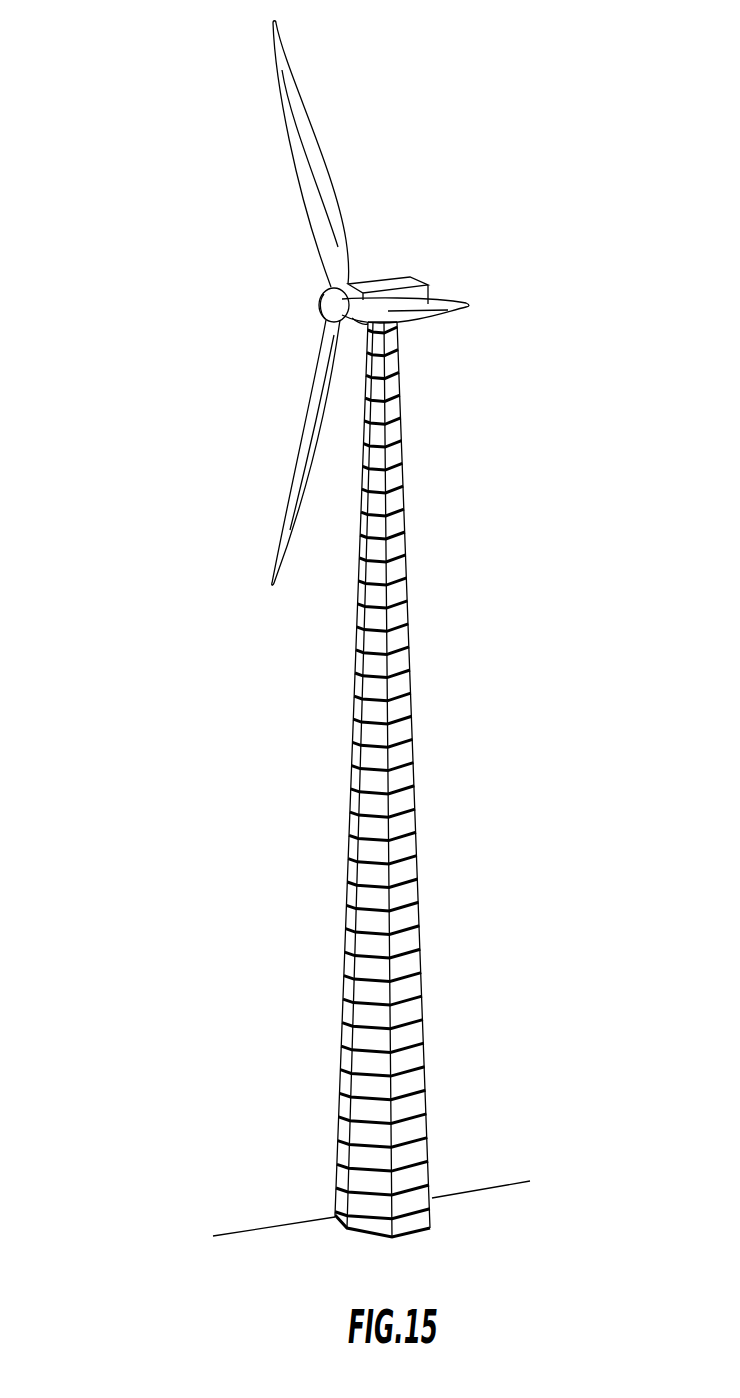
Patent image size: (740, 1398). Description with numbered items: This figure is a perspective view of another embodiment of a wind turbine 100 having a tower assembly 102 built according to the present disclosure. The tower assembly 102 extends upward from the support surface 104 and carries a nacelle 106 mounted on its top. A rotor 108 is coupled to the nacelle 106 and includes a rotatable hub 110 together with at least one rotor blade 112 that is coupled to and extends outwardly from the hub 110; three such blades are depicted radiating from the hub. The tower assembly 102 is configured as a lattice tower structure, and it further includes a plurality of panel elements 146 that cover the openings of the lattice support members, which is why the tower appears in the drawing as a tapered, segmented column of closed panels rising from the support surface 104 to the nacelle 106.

The wind turbine 100 is at (127, 268).
The tower assembly 102 is at (427, 690).
The support surface 104 is at (268, 1225).
The nacelle 106 is at (412, 283).
The rotor 108 is at (310, 324).
The rotatable hub 110 is at (330, 302).
The rotor blade 112 is at (318, 202).
The panel elements 146 is at (408, 800).